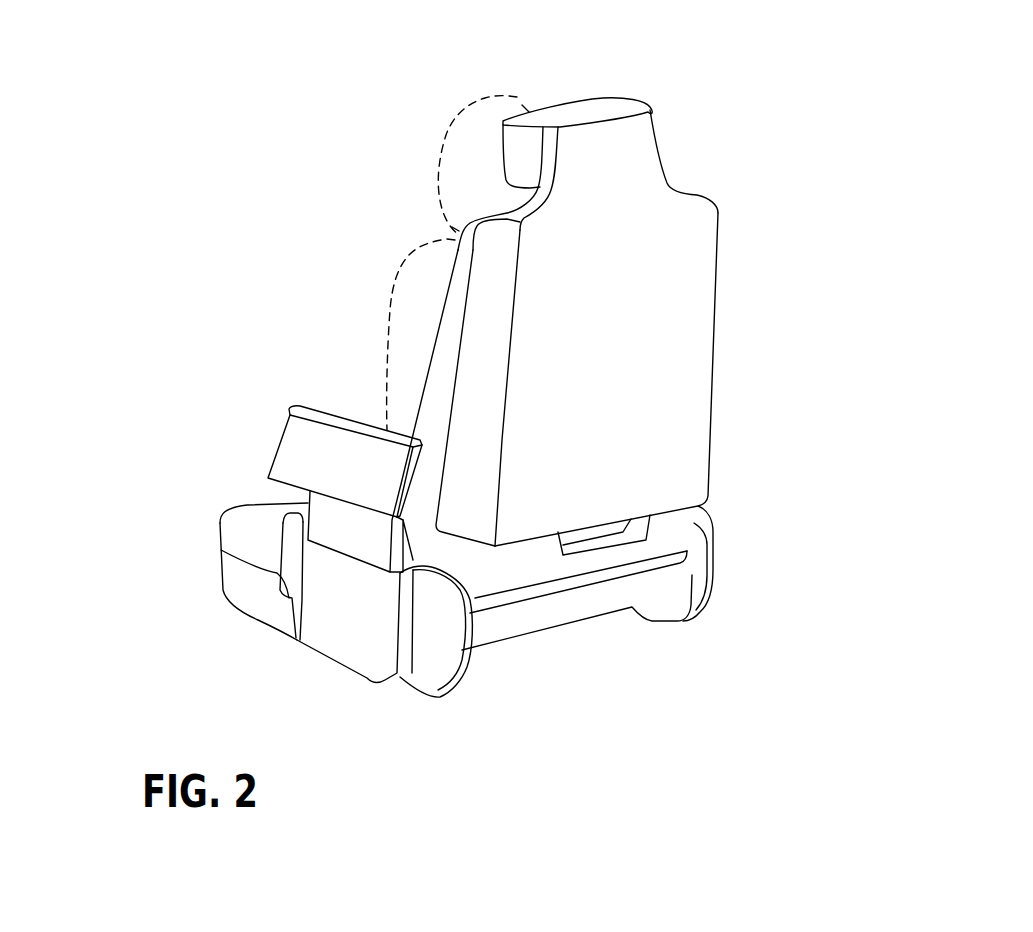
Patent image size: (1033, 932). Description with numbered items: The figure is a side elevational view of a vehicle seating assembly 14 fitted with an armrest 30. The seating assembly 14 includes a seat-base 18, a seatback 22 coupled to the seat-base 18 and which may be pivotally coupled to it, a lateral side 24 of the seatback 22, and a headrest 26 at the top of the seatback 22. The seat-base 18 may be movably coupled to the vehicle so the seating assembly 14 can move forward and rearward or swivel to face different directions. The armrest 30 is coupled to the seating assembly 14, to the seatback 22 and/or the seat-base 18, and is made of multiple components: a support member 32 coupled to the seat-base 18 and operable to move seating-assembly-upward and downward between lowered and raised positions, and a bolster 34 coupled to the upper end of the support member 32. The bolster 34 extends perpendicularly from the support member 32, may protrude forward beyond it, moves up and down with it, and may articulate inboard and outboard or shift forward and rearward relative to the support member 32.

The seating assembly 14 is at (593, 70).
The seat-base 18 is at (238, 538).
The seatback 22 is at (645, 256).
The lateral side 24 is at (482, 427).
The headrest 26 is at (513, 138).
The armrest 30 is at (283, 392).
The support member 32 is at (360, 542).
The bolster 34 is at (360, 477).